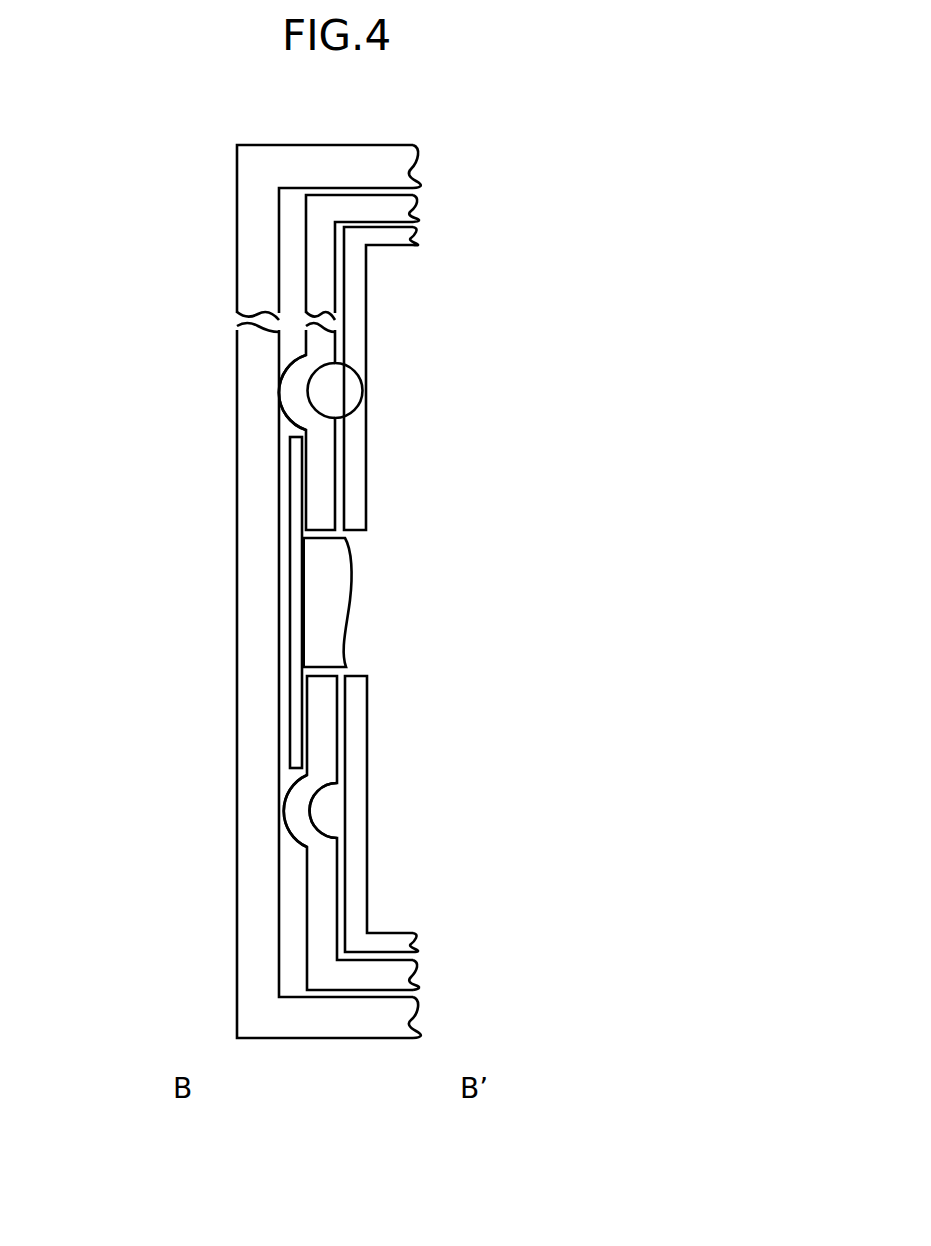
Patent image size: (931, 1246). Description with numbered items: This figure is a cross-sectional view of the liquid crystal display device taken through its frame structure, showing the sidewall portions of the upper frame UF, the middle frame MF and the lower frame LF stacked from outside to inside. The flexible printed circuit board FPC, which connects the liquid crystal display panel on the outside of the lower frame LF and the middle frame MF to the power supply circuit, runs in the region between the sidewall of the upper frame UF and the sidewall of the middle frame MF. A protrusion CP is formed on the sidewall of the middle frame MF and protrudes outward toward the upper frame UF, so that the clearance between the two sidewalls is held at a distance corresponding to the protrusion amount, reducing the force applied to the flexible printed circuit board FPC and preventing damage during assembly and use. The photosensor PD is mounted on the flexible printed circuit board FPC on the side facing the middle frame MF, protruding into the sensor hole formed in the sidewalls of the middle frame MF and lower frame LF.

The upper frame UF is at (250, 200).
The lower frame LF is at (418, 235).
The middle frame MF is at (332, 483).
The protrusion CP is at (293, 392).
The photosensor PD is at (337, 630).
The flexible printed circuit board FPC is at (295, 696).